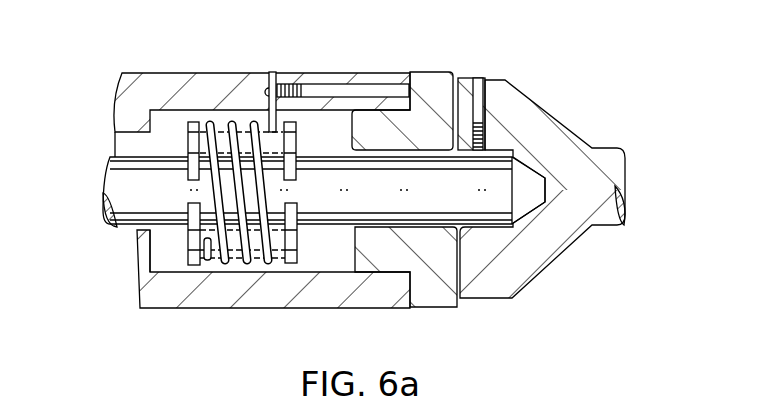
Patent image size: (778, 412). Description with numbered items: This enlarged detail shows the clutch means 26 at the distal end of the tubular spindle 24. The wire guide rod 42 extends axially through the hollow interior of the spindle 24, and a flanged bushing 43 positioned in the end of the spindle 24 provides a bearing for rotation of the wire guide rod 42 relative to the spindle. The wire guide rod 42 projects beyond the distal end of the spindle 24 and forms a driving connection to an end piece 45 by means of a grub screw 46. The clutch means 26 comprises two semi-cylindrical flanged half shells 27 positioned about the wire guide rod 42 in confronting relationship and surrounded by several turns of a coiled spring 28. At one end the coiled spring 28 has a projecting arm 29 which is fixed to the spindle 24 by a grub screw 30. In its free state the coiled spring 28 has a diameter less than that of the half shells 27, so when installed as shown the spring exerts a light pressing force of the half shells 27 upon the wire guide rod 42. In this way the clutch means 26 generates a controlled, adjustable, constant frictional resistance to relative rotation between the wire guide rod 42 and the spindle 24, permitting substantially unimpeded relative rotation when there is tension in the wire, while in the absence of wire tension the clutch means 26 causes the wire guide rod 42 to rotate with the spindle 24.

The spindle 24 is at (185, 75).
The clutch means 26 is at (186, 256).
The semi-cylindrical flanged half shells 27 is at (190, 143).
The coiled spring 28 is at (225, 262).
The projecting arm 29 is at (272, 72).
The grub screw 30 is at (292, 88).
The wire guide rod 42 is at (495, 178).
The flanged bushing 43 is at (423, 72).
The end piece 45 is at (563, 247).
The grub screw 46 is at (477, 125).